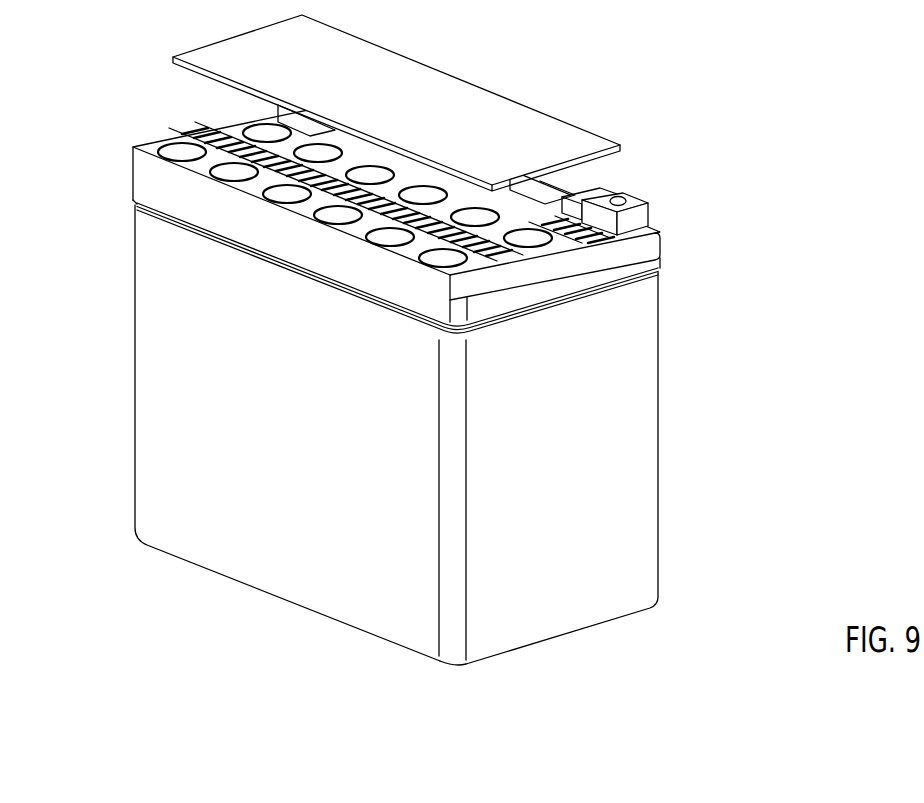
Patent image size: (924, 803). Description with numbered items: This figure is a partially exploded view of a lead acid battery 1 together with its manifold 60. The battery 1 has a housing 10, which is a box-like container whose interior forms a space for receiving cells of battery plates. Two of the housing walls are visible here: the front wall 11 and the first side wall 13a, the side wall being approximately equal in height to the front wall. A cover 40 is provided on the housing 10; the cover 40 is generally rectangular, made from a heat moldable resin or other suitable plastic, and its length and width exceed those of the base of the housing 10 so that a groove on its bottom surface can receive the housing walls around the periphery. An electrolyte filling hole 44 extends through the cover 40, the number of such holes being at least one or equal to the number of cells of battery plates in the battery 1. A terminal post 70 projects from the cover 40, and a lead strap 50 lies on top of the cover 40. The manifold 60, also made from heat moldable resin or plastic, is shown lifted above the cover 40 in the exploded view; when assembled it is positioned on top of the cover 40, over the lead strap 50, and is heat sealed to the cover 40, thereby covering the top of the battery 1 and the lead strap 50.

The lead acid battery 1 is at (680, 107).
The housing 10 is at (640, 390).
The front wall 11 is at (307, 441).
The first side wall 13a is at (577, 467).
The cover 40 is at (193, 210).
The electrolyte filling hole 44 is at (538, 238).
The lead strap 50 is at (366, 148).
The manifold 60 is at (459, 87).
The terminal post 70 is at (638, 220).